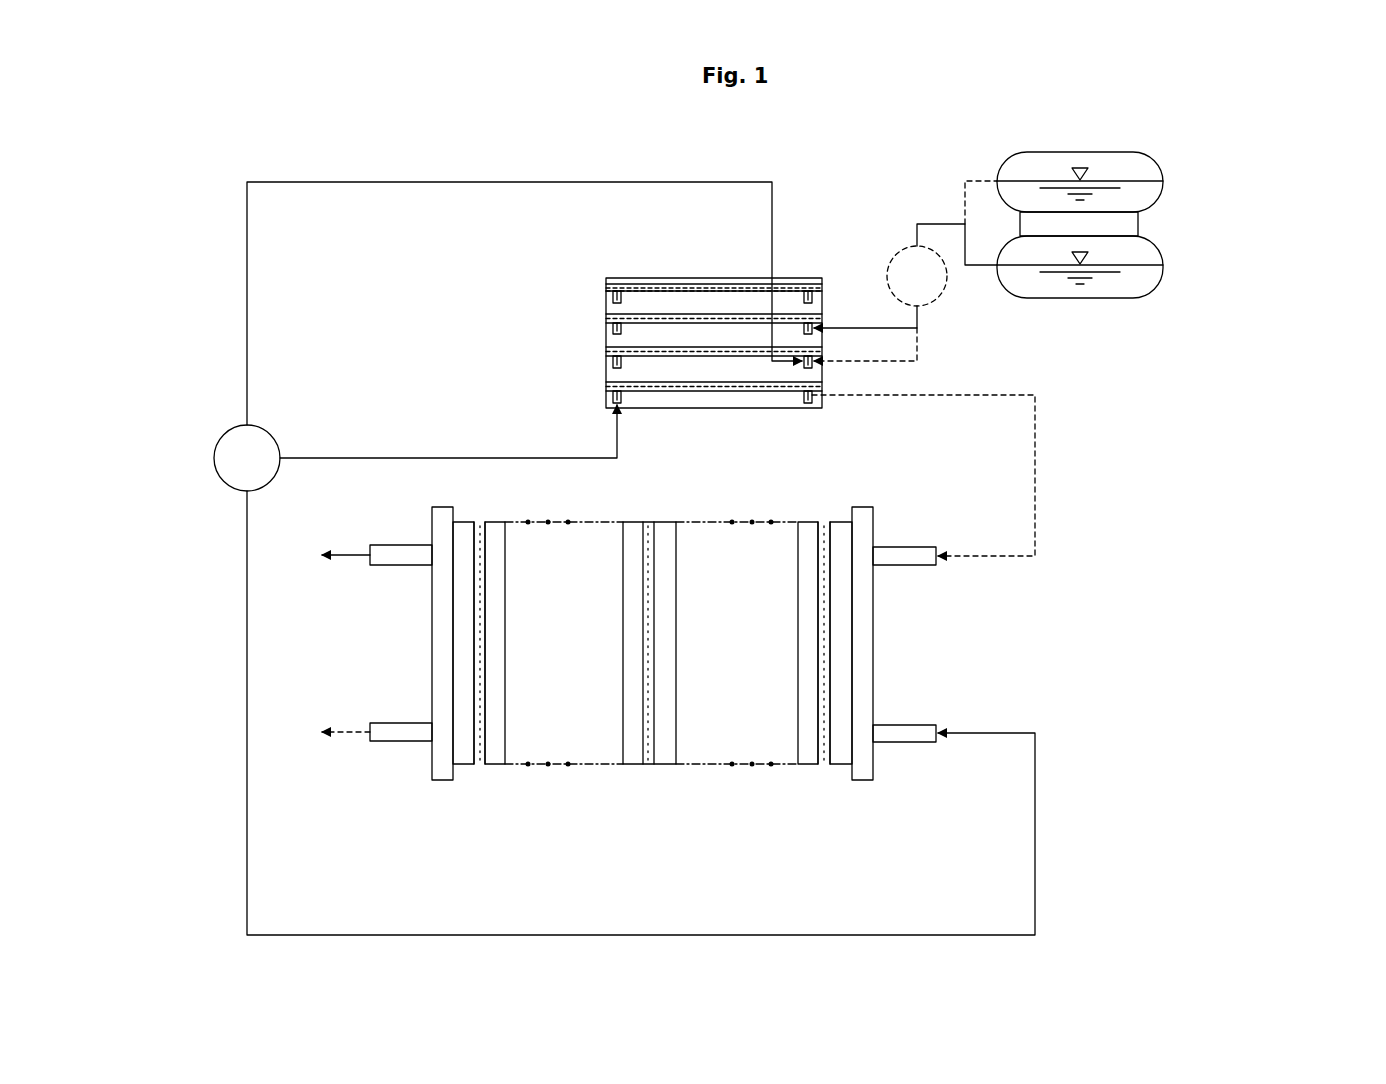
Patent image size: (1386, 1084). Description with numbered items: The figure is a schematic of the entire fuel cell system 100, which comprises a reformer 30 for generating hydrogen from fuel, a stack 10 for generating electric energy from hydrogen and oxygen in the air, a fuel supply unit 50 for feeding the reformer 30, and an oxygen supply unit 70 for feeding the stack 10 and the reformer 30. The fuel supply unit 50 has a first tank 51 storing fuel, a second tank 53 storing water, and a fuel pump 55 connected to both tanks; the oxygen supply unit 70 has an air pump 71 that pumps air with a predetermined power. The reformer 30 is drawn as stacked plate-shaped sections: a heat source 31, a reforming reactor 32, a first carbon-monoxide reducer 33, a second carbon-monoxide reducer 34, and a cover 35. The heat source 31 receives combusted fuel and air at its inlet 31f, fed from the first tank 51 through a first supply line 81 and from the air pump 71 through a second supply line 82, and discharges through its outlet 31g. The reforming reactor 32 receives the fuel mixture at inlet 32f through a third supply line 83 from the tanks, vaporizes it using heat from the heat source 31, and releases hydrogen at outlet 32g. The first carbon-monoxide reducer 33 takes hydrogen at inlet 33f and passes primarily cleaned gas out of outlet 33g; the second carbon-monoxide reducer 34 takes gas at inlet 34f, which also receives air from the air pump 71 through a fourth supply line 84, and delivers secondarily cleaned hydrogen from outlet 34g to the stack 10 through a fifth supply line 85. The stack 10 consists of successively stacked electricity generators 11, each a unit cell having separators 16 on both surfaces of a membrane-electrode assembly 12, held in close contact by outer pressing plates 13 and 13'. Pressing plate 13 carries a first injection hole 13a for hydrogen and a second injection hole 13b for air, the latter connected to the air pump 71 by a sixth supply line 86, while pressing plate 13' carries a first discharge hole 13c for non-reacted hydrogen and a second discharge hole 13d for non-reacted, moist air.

The stack 10 is at (662, 709).
The electricity generator 11 is at (685, 870).
The membrane-electrode assembly 12 is at (480, 765).
The pressing plate 13 is at (873, 668).
The pressing plate 13' is at (432, 668).
The first injection hole 13a is at (908, 547).
The second injection hole 13b is at (907, 743).
The first discharge hole 13c is at (372, 742).
The second discharge hole 13d is at (396, 545).
The separator 16 is at (500, 765).
The reformer 30 is at (727, 448).
The heat source 31 is at (607, 365).
The inlet 31f is at (806, 368).
The outlet 31g is at (622, 360).
The reforming reactor 32 is at (607, 331).
The inlet 32f is at (805, 322).
The outlet 32g is at (622, 323).
The first carbon-monoxide reducer 33 is at (607, 297).
The inlet 33f is at (613, 292).
The outlet 33g is at (812, 292).
The second carbon-monoxide reducer 34 is at (607, 399).
The inlet 34f is at (622, 394).
The outlet 34g is at (812, 405).
The cover 35 is at (722, 284).
The fuel supply unit 50 is at (1127, 225).
The first tank 51 is at (1046, 152).
The second tank 53 is at (1040, 298).
The fuel pump 55 is at (898, 250).
The oxygen supply unit 70 is at (290, 440).
The air pump 71 is at (258, 428).
The first supply line 81 is at (920, 348).
The second supply line 82 is at (630, 182).
The third supply line 83 is at (860, 328).
The fourth supply line 84 is at (462, 458).
The fifth supply line 85 is at (1035, 458).
The sixth supply line 86 is at (247, 676).
The fuel cell system 100 is at (1235, 277).